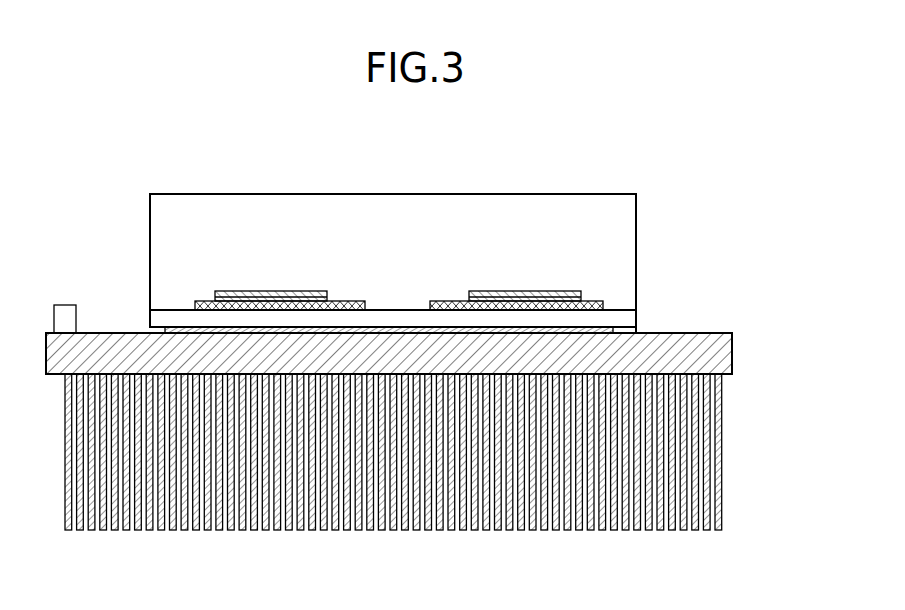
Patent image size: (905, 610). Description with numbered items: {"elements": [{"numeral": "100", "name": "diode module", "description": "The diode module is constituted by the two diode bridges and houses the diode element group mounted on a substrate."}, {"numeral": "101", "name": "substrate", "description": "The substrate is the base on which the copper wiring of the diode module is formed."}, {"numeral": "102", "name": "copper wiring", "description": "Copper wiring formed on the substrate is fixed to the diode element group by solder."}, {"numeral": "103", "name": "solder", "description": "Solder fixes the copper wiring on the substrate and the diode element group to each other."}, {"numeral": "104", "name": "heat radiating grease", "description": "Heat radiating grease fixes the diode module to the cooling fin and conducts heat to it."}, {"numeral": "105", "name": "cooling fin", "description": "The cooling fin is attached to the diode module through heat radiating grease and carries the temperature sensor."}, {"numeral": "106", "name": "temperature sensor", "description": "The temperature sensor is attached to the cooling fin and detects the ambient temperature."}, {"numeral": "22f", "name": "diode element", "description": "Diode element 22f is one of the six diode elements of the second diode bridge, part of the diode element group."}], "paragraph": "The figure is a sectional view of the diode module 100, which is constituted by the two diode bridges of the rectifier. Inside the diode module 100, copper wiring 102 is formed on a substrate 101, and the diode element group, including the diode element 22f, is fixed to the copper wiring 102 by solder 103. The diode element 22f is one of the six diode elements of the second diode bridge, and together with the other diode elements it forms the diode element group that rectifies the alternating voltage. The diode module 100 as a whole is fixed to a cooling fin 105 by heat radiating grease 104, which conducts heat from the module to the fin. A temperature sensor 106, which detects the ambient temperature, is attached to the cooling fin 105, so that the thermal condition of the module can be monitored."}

The semiconductor module 100 is at (388, 194).
The insulating substrate 101 is at (150, 316).
The conductive layer / solder 102 is at (195, 305).
The semiconductor element 103 is at (215, 297).
The thermal grease layer 104 is at (613, 331).
The heat sink 105 is at (732, 350).
The terminal 106 is at (64, 305).
The semiconductor chips 21a-21f or 22a- 22f is at (512, 291).